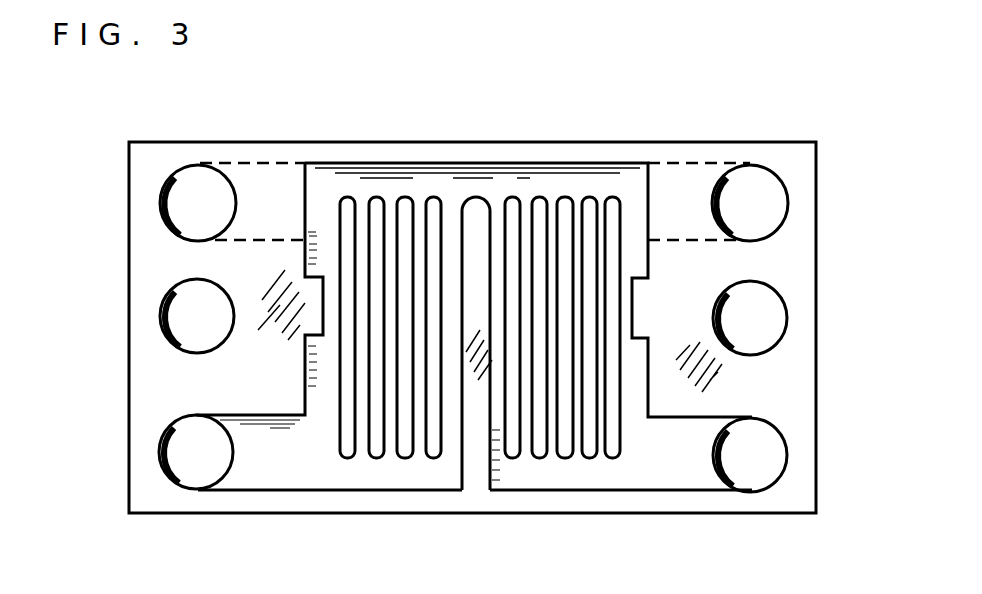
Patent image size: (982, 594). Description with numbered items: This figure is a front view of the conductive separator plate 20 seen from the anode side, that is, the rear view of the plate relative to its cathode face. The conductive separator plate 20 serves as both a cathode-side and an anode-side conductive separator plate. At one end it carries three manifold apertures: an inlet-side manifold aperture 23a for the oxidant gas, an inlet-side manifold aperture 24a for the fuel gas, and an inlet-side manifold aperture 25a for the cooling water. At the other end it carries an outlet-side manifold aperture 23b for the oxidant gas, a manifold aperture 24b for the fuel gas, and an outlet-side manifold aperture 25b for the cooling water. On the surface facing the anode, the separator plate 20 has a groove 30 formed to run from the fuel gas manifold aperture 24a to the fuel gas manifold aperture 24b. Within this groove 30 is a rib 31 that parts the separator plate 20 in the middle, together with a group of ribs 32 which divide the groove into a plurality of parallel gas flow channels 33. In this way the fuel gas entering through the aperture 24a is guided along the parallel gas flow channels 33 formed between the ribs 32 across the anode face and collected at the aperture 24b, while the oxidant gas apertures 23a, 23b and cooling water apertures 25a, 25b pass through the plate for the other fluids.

The conductive separator plate 20 is at (487, 142).
The groove 30 is at (282, 470).
The rib 31 is at (475, 455).
The group of ribs 32 is at (565, 200).
The parallel gas flow channels 33 is at (388, 218).
The inlet-side manifold aperture for oxidant gas 23a is at (200, 190).
The outlet-side manifold aperture for oxidant gas 23b is at (742, 200).
The inlet-side manifold aperture for fuel gas 24a is at (197, 465).
The manifold aperture for fuel gas 24b is at (750, 465).
The inlet-side manifold aperture for cooling water 25a is at (190, 320).
The outlet-side manifold aperture for cooling water 25b is at (755, 332).